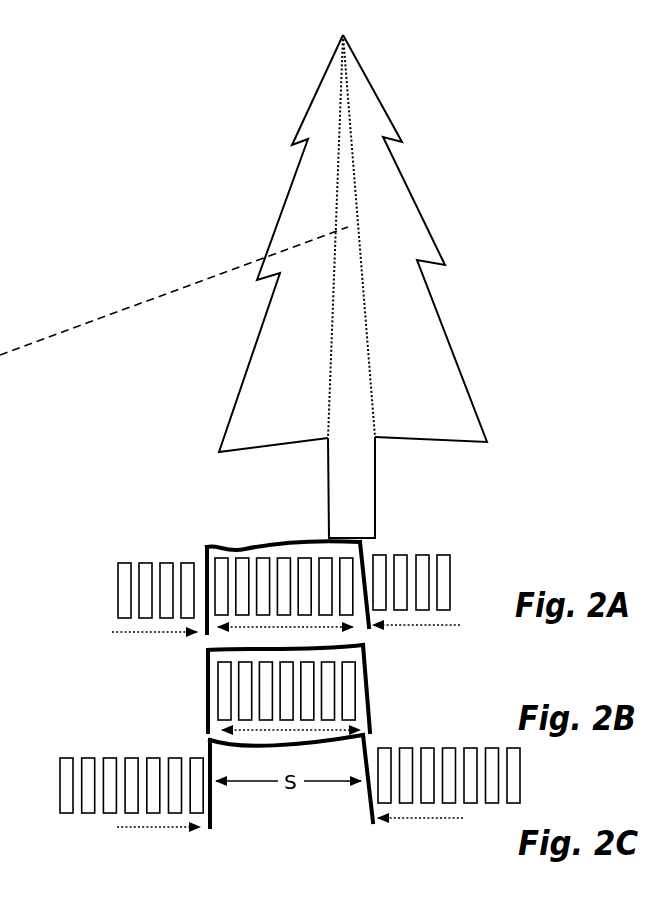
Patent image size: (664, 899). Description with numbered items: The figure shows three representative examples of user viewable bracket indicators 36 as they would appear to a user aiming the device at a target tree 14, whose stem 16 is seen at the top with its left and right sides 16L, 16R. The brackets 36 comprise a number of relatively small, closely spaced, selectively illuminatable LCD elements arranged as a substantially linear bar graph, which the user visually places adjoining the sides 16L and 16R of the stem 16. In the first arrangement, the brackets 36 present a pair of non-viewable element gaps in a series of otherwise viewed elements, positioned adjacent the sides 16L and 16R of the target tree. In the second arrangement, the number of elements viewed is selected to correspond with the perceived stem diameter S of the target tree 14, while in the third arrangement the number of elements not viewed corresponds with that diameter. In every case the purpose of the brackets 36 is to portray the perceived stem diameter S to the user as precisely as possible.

In FIG. 2A, the target tree 14 is at (260, 116).
In FIG. 2A, the stem 16 is at (349, 311).
In FIG. 2A, the left side of stem 16L is at (320, 388).
In FIG. 2B, the left side of stem 16L is at (205, 687).
In FIG. 2C, the left side of stem 16L is at (205, 748).
In FIG. 2A, the right side of stem 16R is at (375, 388).
In FIG. 2B, the right side of stem 16R is at (375, 680).
In FIG. 2C, the right side of stem 16R is at (376, 743).
In FIG. 2A, the bracket indicators 36 is at (104, 592).
In FIG. 2B, the bracket indicators 36 is at (317, 650).
In FIG. 2C, the bracket indicators 36 is at (57, 802).